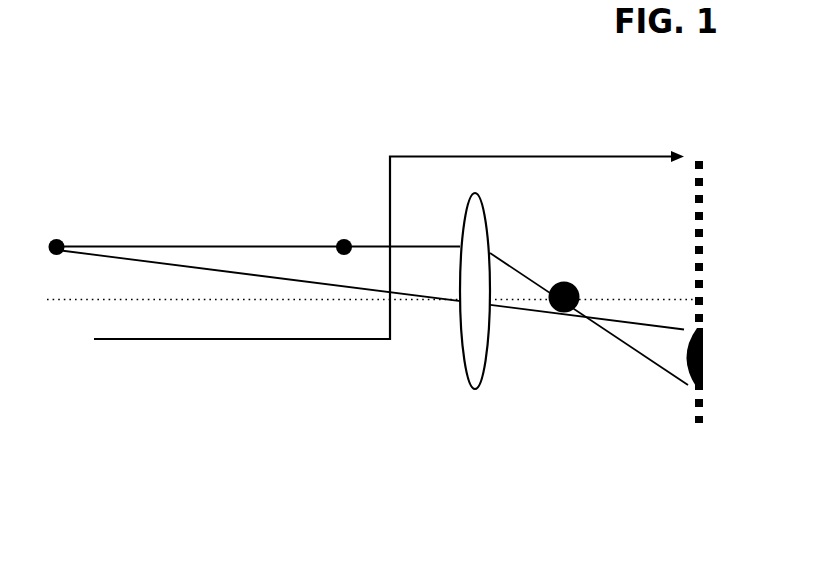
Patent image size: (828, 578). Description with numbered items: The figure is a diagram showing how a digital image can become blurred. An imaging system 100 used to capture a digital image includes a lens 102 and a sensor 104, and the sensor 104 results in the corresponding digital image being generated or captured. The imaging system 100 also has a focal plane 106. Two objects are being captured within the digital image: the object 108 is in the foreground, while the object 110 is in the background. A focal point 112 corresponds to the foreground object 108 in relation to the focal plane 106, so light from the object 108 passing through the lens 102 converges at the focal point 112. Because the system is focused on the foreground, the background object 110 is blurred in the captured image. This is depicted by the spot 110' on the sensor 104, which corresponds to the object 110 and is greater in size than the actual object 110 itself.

The imaging system 100 is at (475, 430).
The lens 102 is at (488, 203).
The sensor 104 is at (703, 199).
The focal plane 106 is at (389, 191).
The object 108 is at (342, 239).
The object 110 is at (73, 220).
The spot 110' is at (725, 352).
The focal point 112 is at (578, 284).